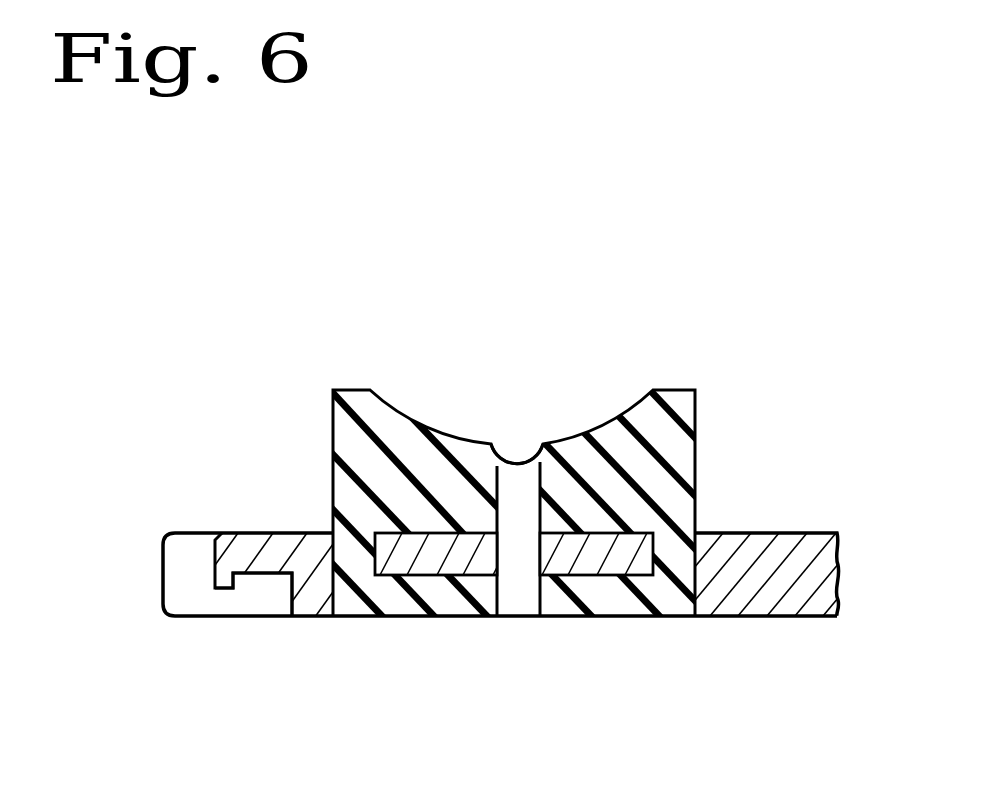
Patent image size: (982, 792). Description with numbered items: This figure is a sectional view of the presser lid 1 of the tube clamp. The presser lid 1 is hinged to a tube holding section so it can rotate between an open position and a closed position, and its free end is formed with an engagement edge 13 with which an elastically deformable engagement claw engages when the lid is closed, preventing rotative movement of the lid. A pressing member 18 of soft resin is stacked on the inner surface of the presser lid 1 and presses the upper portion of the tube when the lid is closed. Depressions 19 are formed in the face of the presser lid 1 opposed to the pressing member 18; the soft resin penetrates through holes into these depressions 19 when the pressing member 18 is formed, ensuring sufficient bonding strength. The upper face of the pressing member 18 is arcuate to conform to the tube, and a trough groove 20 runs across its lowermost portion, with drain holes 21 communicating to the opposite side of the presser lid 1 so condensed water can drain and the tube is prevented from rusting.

The presser lid 1 is at (803, 537).
The engagement edge 13 is at (285, 578).
The pressing member 18 is at (680, 455).
The depression 19 is at (417, 575).
The trough groove 20 is at (541, 446).
The drain hole 21 is at (519, 597).